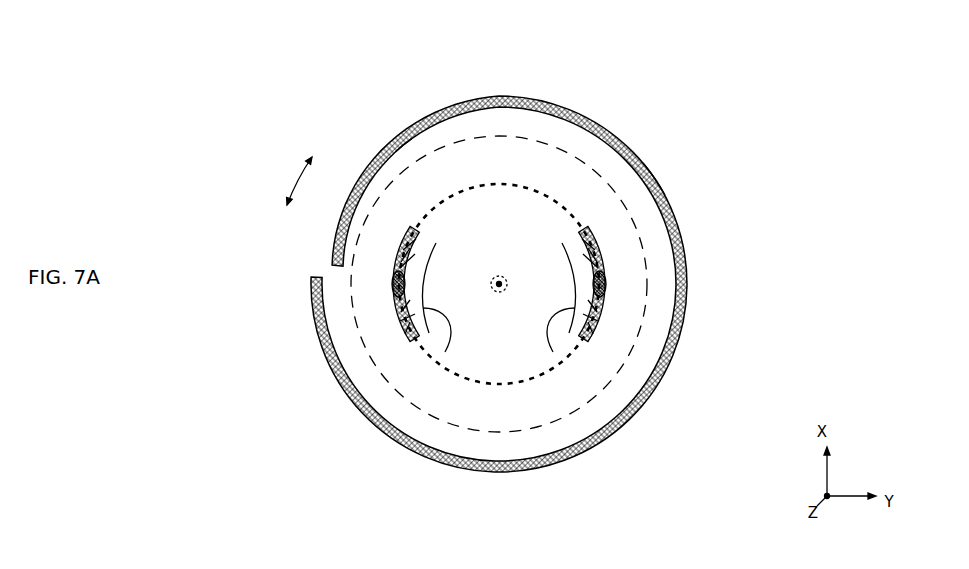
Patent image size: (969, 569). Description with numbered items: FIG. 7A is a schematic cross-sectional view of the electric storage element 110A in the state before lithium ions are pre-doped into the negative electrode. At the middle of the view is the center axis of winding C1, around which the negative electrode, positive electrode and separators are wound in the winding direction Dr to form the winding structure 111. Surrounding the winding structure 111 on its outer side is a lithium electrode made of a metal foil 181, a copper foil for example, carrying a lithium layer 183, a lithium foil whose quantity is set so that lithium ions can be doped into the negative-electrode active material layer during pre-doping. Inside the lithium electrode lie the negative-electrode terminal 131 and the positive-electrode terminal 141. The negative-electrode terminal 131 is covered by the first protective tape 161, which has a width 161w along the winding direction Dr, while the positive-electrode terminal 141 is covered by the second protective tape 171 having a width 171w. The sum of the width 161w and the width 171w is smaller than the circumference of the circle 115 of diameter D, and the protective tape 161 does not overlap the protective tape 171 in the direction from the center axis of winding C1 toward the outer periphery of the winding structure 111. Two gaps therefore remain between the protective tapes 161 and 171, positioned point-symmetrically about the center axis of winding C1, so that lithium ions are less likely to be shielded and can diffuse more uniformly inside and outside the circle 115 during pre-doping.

The electric storage element 110A is at (665, 140).
The winding structure 111 is at (645, 344).
The circle 115 is at (523, 381).
The negative-electrode terminal 131 is at (610, 275).
The positive-electrode terminal 141 is at (408, 290).
The protective tape 161 is at (592, 237).
The width 161w is at (553, 352).
The protective tape 171 is at (400, 338).
The width 171w is at (445, 352).
The metal foil 181 is at (375, 160).
The lithium layer 183 is at (437, 134).
The center axis of winding C1 is at (499, 294).
The winding direction Dr is at (291, 181).